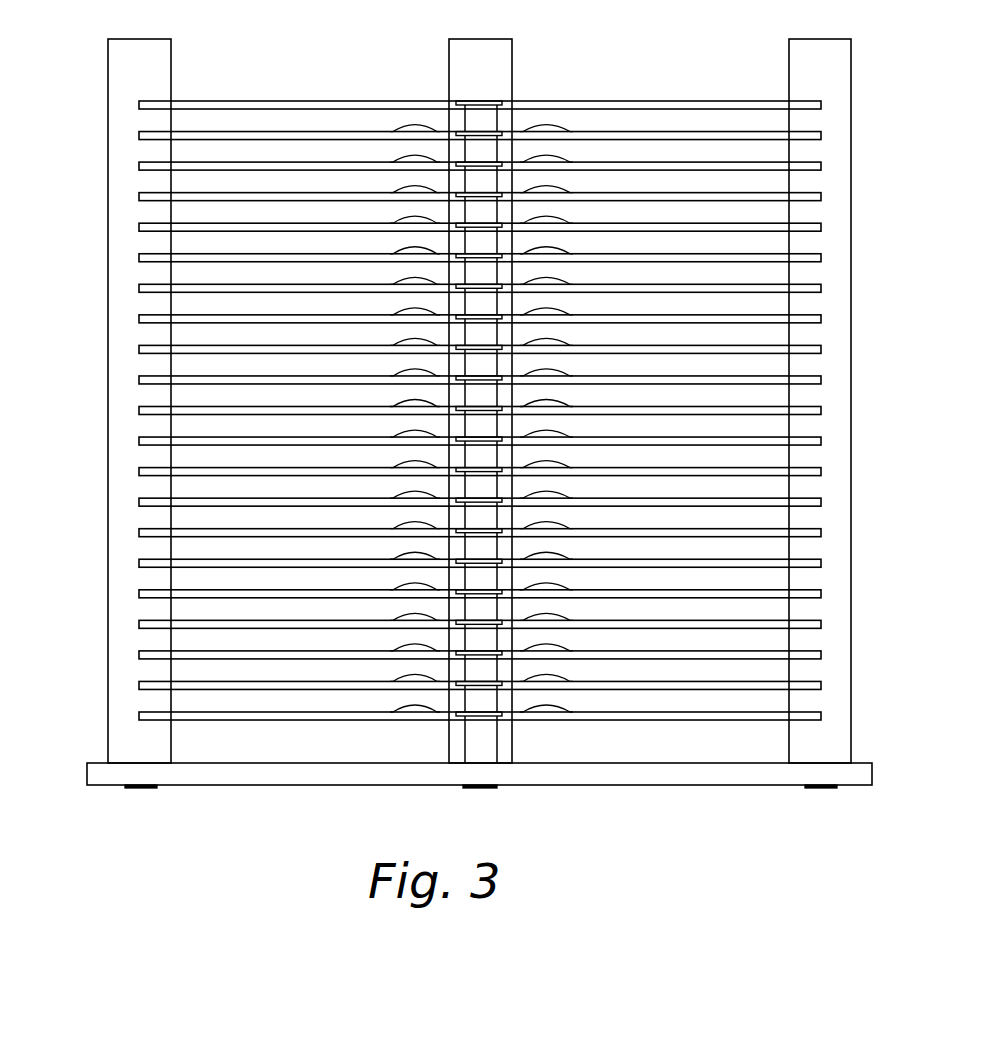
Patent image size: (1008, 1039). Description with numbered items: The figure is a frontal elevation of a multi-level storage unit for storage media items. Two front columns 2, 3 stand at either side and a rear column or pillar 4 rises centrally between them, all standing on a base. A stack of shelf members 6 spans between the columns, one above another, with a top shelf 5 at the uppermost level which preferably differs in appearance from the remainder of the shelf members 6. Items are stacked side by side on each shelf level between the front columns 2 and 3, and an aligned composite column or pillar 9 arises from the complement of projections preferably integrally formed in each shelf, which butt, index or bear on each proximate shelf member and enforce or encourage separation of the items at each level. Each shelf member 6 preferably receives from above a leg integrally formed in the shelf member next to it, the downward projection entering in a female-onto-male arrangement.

The front column 2 is at (820, 395).
The front column 3 is at (140, 398).
The rear column or pillar 4 is at (492, 66).
The top shelf 5 is at (663, 102).
The shelf members 6 is at (808, 195).
The composite column or pillar 9 is at (478, 739).